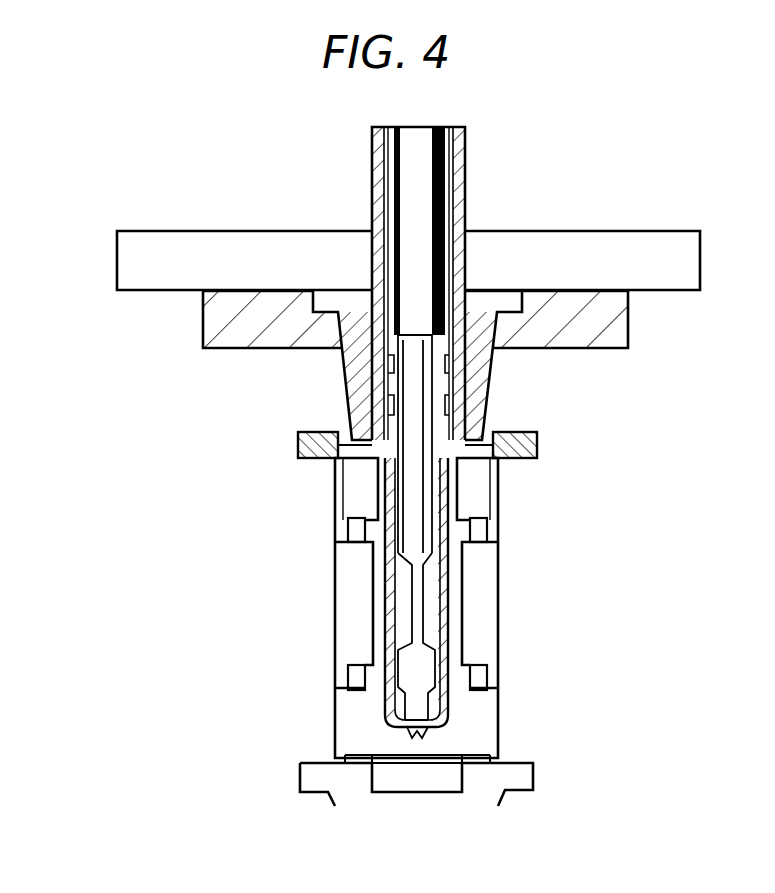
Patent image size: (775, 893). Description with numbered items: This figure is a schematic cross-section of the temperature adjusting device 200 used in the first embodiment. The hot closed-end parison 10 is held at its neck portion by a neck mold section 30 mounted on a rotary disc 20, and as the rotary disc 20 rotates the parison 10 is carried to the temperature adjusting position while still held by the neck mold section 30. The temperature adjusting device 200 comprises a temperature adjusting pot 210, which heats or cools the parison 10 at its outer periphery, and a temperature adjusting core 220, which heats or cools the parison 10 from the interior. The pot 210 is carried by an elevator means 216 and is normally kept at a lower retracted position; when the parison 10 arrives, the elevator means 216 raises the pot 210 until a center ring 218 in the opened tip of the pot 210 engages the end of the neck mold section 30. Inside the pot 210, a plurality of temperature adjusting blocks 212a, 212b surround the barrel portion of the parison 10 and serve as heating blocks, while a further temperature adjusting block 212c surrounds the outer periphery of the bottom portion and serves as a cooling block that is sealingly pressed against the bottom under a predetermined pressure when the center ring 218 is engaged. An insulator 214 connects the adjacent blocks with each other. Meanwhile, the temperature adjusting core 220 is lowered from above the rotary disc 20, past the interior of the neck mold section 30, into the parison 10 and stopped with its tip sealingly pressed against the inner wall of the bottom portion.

The temperature adjusting device 200 is at (636, 148).
The rotary disc 20 is at (672, 246).
The neck mold section 30 is at (482, 373).
The temperature adjusting core 220 is at (418, 413).
The center ring 218 is at (514, 458).
The temperature adjusting block 212a is at (352, 487).
The temperature adjusting block 212b is at (352, 589).
The temperature adjusting block 212c is at (354, 700).
The insulator 214 is at (350, 533).
The closed-end parison 10 is at (440, 595).
The temperature adjusting pot 210 is at (508, 740).
The elevator means 216 is at (520, 784).